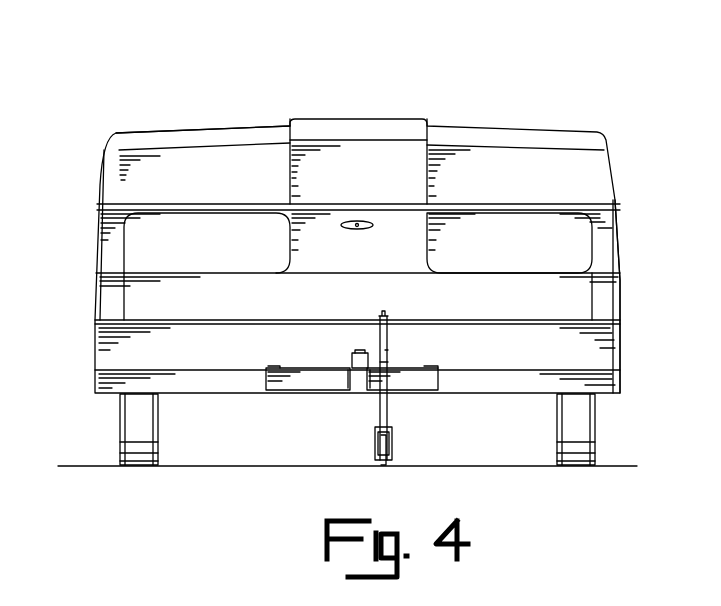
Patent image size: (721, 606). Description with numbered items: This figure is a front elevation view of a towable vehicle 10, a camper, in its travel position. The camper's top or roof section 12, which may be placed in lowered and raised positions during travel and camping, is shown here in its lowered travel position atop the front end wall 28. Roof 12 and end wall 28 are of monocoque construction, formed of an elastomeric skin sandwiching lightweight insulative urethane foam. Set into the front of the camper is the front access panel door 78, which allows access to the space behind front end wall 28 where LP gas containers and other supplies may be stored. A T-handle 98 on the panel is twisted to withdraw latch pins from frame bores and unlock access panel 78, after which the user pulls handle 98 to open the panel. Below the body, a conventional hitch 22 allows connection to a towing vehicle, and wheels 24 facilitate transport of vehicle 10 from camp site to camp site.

The towable vehicle 10 is at (386, 104).
The roof section 12 is at (227, 133).
The front access panel door 78 is at (513, 224).
The T-handle 98 is at (366, 221).
The front end wall 28 is at (622, 338).
The wheels 24 is at (131, 424).
The hitch 22 is at (317, 388).